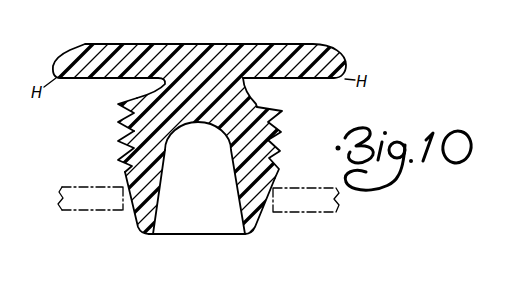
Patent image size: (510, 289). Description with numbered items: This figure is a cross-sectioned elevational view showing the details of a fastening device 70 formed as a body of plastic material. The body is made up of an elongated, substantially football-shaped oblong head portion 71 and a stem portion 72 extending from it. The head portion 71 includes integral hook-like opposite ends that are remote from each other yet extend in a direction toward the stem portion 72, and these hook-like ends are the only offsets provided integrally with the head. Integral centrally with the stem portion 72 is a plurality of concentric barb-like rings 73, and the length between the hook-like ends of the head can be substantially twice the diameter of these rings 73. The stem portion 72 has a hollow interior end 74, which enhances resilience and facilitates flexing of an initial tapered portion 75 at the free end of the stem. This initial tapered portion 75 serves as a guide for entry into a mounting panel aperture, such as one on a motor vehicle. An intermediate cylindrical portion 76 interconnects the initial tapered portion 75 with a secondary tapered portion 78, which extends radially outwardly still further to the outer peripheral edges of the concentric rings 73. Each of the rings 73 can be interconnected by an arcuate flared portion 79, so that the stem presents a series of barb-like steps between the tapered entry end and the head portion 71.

The fastening device 70 is at (259, 44).
The head portion 71 is at (300, 44).
The stem portion 72 is at (147, 202).
The concentric barb-like rings 73 is at (282, 112).
The hollow interior end 74 is at (228, 227).
The initial tapered portion 75 is at (138, 223).
The intermediate cylindrical portion 76 is at (124, 178).
The secondary tapered portion 78 is at (120, 160).
The arcuate flared portion 79 is at (119, 123).